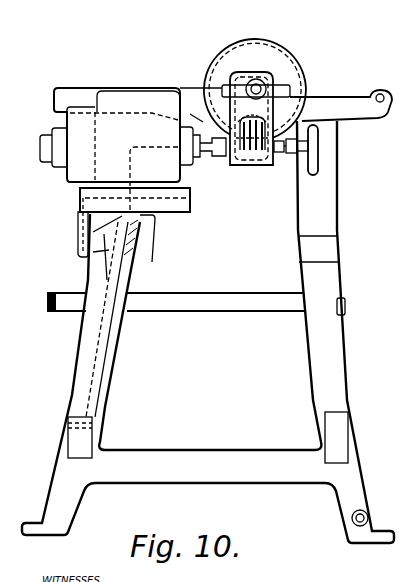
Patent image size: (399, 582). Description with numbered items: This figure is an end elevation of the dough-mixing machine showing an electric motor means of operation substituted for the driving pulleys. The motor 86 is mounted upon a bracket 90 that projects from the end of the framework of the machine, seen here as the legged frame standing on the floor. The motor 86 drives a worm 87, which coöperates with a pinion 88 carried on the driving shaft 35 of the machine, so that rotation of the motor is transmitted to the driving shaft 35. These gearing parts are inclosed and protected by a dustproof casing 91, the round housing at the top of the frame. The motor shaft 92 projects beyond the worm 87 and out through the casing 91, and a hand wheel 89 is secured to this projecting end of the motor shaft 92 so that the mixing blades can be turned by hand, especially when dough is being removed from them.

The motor 86 is at (133, 100).
The dustproof casing 91 is at (252, 52).
The driving shaft 35 is at (260, 83).
The pinion 88 is at (283, 118).
The hand wheel 89 is at (320, 163).
The worm 87 is at (246, 152).
The motor shaft 92 is at (292, 155).
The bracket 90 is at (103, 330).